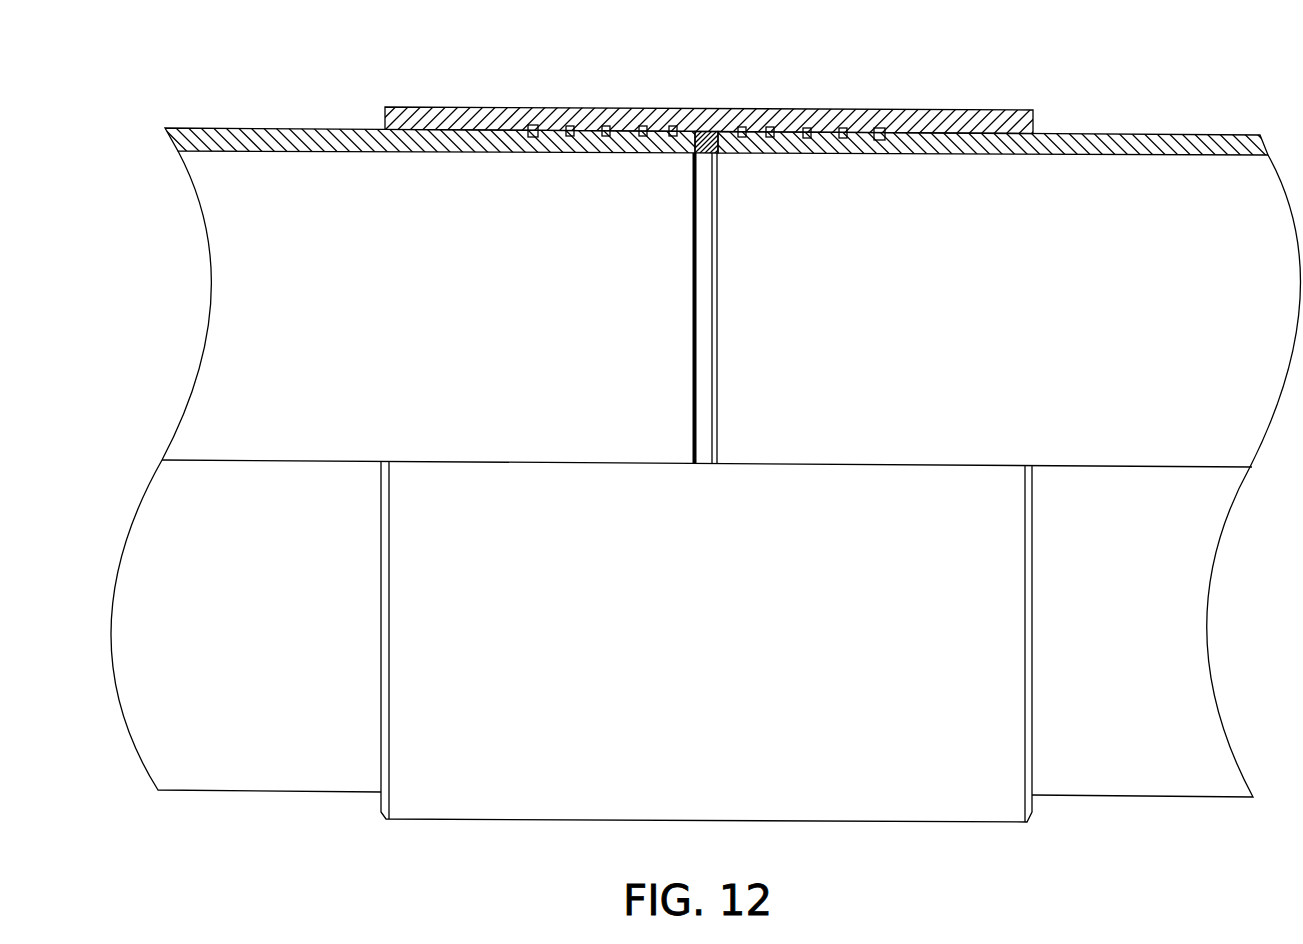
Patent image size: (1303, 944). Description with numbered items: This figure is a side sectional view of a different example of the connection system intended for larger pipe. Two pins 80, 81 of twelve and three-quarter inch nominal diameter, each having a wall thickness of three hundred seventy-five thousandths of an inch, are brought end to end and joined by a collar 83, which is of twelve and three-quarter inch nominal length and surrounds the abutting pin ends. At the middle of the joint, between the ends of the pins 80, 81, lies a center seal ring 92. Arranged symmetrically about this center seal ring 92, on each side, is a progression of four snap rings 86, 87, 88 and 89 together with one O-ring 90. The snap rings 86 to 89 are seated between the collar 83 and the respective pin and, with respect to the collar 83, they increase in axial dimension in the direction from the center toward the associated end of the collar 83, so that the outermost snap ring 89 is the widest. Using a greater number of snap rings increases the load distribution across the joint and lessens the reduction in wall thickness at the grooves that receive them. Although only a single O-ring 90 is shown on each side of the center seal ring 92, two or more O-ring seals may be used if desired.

The pin 80 is at (302, 128).
The pin 81 is at (1167, 133).
The collar 83 is at (961, 108).
The snap ring 86 is at (645, 125).
The snap ring 87 is at (605, 125).
The snap ring 88 is at (571, 125).
The snap ring 89 is at (533, 125).
The O-ring 90 is at (673, 126).
The center seal ring 92 is at (706, 131).